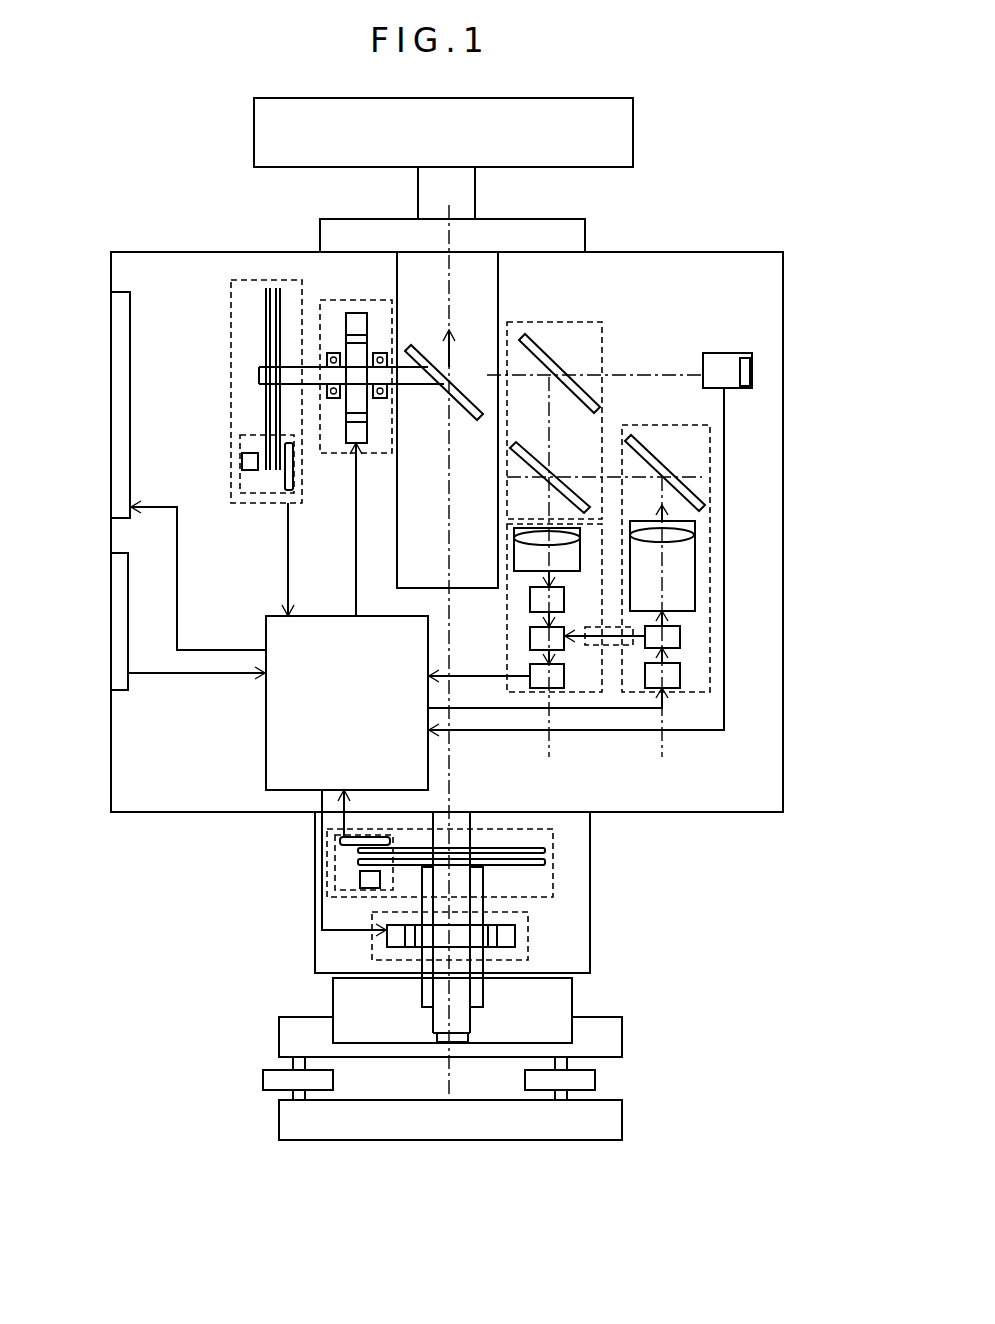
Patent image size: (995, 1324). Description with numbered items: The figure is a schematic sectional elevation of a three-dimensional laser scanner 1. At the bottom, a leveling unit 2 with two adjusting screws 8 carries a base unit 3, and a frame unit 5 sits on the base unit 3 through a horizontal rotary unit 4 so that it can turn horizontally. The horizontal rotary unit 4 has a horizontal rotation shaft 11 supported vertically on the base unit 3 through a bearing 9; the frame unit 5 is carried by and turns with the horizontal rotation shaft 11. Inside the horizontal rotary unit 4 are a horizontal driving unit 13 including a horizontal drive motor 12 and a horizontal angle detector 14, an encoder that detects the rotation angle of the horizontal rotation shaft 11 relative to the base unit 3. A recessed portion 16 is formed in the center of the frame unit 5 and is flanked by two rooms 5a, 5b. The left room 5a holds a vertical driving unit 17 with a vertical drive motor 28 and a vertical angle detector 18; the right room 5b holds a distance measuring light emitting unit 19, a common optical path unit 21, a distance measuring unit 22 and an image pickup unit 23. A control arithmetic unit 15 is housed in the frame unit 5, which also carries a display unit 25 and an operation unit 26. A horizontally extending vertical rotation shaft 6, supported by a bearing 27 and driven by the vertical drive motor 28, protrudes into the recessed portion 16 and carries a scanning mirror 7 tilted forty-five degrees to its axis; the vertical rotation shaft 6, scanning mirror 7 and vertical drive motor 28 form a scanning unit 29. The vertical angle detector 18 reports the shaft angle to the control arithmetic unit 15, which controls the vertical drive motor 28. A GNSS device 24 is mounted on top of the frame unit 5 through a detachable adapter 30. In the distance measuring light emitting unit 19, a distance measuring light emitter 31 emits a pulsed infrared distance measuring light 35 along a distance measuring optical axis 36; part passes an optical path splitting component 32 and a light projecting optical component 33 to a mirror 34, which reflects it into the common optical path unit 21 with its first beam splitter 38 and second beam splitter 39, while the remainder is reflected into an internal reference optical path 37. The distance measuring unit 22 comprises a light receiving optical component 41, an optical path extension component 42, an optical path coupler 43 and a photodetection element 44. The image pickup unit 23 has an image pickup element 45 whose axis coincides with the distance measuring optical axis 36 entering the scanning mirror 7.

The laser scanner 1 is at (131, 189).
The leveling unit 2 is at (249, 1082).
The base unit 3 is at (572, 997).
The horizontal rotary unit 4 is at (590, 877).
The frame unit 5 is at (208, 813).
The room 5a is at (193, 306).
The room 5b is at (708, 300).
The vertical rotation shaft 6 is at (417, 390).
The scanning mirror 7 is at (412, 350).
The adjusting screws 8 is at (595, 1078).
The bearing 9 is at (483, 990).
The horizontal rotation shaft 11 is at (420, 983).
The horizontal drive motor 12 is at (515, 935).
The horizontal driving unit 13 is at (528, 950).
The horizontal angle detector 14 is at (553, 857).
The control arithmetic unit 15 is at (266, 737).
The recessed portion 16 is at (429, 489).
The vertical driving unit 17 is at (367, 300).
The vertical angle detector 18 is at (230, 385).
The distance measuring light emitting unit 19 is at (713, 640).
The common optical path unit 21 is at (527, 318).
The distance measuring unit 22 is at (507, 580).
The image pickup unit 23 is at (737, 353).
The GNSS device 24 is at (633, 135).
The display unit 25 is at (109, 350).
The operation unit 26 is at (109, 622).
The bearing 27 is at (323, 413).
The vertical drive motor 28 is at (347, 310).
The scanning unit 29 is at (412, 275).
The adapter 30 is at (585, 232).
The distance measuring light emitter 31 is at (663, 697).
The optical path splitting component 32 is at (680, 643).
The light projecting optical component 33 is at (697, 543).
The mirror 34 is at (673, 483).
The distance measuring light 35 is at (662, 587).
The distance measuring optical axis 36 is at (449, 357).
The internal reference optical path 37 is at (612, 645).
The first beam splitter 38 is at (533, 453).
The second beam splitter 39 is at (537, 337).
The light receiving optical component 41 is at (514, 532).
The optical path extension component 42 is at (530, 592).
The optical path coupler 43 is at (530, 643).
The photodetection element 44 is at (538, 690).
The image pickup element 45 is at (737, 380).